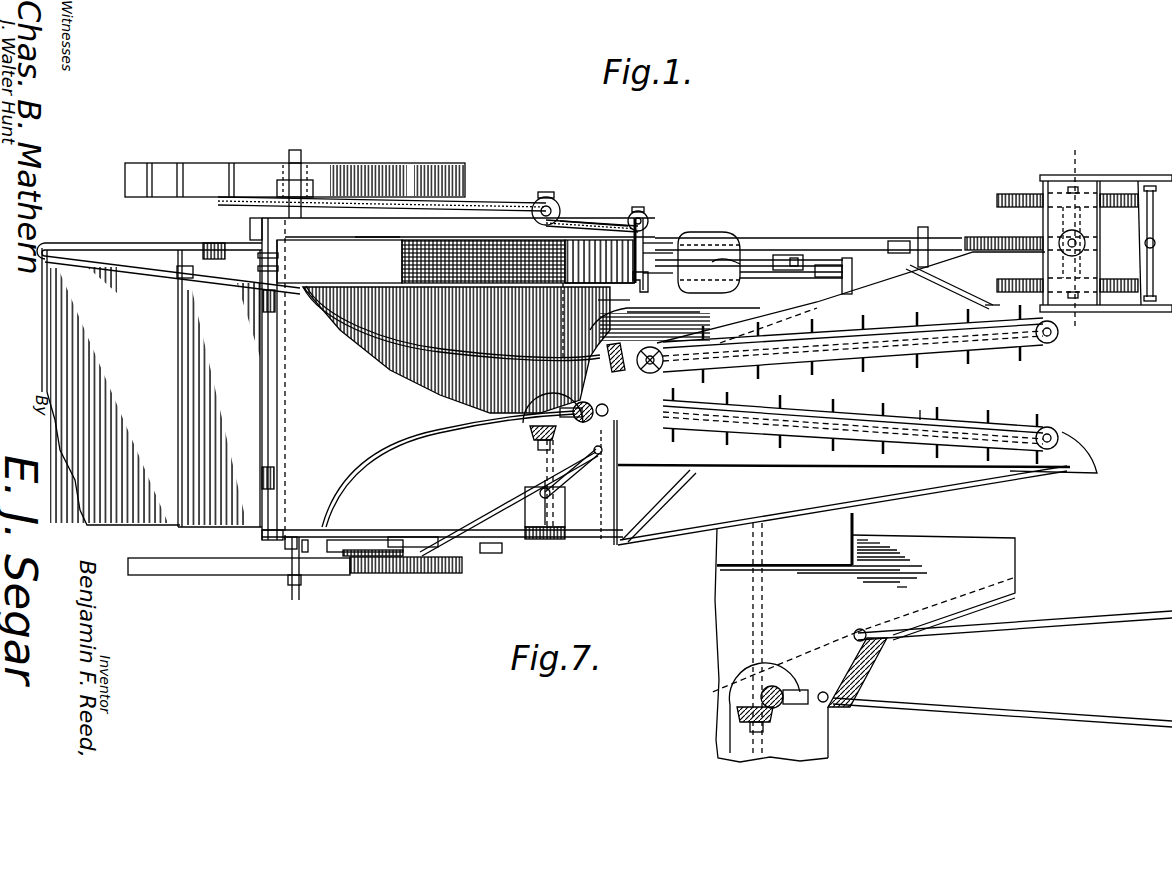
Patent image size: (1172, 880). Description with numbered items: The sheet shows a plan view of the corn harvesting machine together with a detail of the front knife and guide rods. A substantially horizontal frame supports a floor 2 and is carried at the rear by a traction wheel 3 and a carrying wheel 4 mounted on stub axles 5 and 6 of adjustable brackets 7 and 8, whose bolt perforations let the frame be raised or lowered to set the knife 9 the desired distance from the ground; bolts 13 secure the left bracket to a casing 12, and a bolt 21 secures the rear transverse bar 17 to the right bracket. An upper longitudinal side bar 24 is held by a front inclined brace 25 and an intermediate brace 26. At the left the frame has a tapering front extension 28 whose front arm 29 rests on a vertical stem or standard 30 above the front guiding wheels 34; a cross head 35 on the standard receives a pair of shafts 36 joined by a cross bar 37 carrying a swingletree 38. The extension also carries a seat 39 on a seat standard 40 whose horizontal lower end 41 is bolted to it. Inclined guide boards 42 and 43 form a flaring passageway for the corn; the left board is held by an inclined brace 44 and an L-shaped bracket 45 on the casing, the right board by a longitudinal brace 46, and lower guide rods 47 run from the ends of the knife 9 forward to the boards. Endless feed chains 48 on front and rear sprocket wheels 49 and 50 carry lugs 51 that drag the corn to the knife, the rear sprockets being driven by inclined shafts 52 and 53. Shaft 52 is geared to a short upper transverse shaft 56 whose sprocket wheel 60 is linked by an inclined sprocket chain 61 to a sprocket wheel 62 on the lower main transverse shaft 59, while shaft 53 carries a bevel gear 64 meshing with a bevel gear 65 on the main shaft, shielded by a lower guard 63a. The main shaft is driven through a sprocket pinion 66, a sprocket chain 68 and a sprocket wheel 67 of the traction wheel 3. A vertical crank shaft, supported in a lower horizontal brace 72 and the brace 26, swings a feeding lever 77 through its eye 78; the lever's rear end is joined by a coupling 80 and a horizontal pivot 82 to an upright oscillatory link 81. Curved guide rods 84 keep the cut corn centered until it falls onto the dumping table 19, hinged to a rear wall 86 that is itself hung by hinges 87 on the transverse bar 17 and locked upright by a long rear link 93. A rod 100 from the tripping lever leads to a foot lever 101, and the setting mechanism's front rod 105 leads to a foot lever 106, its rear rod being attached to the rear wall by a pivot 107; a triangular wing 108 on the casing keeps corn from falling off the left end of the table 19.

In FIG. 1, the floor 2 is at (442, 379).
In FIG. 7, the floor 2 is at (829, 744).
In FIG. 1, the traction wheel 3 is at (164, 180).
In FIG. 1, the carrying wheel 4 is at (230, 576).
In FIG. 1, the stub axle 5 is at (295, 150).
In FIG. 1, the stub axle 6 is at (292, 586).
In FIG. 1, the adjustable bracket 7 is at (458, 250).
In FIG. 1, the adjustable bracket 8 is at (292, 536).
In FIG. 1, the knife 9 is at (617, 355).
In FIG. 7, the knife 9 is at (866, 672).
In FIG. 1, the casing 12 is at (465, 247).
In FIG. 7, the casing 12 is at (819, 541).
In FIG. 1, the bolt 13 is at (560, 497).
In FIG. 1, the rear transverse bar 17 is at (266, 234).
In FIG. 1, the dumping table or platform 19 is at (111, 386).
In FIG. 1, the bolt 21 is at (306, 553).
In FIG. 1, the upper longitudinal side bar 24 is at (360, 540).
In FIG. 1, the front inclined brace 25 is at (660, 510).
In FIG. 1, the intermediate brace 26 is at (510, 548).
In FIG. 1, the tapering front extension 28 is at (808, 227).
In FIG. 7, the tapering front extension 28 is at (862, 614).
In FIG. 1, the front arm 29 is at (985, 237).
In FIG. 1, the vertical stem or standard 30 is at (1082, 246).
In FIG. 1, the front guiding wheels 34 is at (1020, 193).
In FIG. 1, the cross head 35 is at (1057, 218).
In FIG. 1, the plate 36 is at (1113, 175).
In FIG. 1, the cross bar 37 is at (1151, 186).
In FIG. 1, the swingletree 38 is at (1125, 243).
In FIG. 1, the seat 39 is at (712, 232).
In FIG. 1, the seat standard 40 is at (770, 258).
In FIG. 1, the lower end of seat standard 41 is at (800, 257).
In FIG. 1, the left hand guide board 42 is at (853, 326).
In FIG. 1, the right hand guide board 43 is at (857, 436).
In FIG. 1, the inclined brace 44 is at (956, 290).
In FIG. 1, the L-shaped bracket 45 is at (601, 297).
In FIG. 1, the longitudinal brace 46 is at (786, 512).
In FIG. 7, the lower guide rods 47 is at (983, 630).
In FIG. 1, the endless feed chains 48 is at (921, 410).
In FIG. 1, the front sprocket wheels 49 is at (1047, 345).
In FIG. 1, the rear sprocket wheels 50 is at (672, 355).
In FIG. 1, the lugs or projections 51 is at (855, 398).
In FIG. 1, the inclined shaft 52 is at (664, 352).
In FIG. 1, the inclined shaft 53 is at (613, 455).
In FIG. 7, the inclined shaft 53 is at (786, 710).
In FIG. 1, the upper transverse shaft 56 is at (656, 274).
In FIG. 1, the lower main transverse shaft 59 is at (545, 452).
In FIG. 7, the lower main transverse shaft 59 is at (766, 603).
In FIG. 1, the sprocket wheel 60 is at (648, 212).
In FIG. 1, the inclined sprocket chain 61 is at (618, 220).
In FIG. 1, the lower sprocket wheel 62 is at (578, 219).
In FIG. 1, the lower guard 63a is at (528, 413).
In FIG. 7, the lower guard 63a is at (730, 735).
In FIG. 1, the bevel gear 64 is at (581, 402).
In FIG. 7, the bevel gear 64 is at (778, 686).
In FIG. 1, the bevel gear 65 is at (554, 434).
In FIG. 7, the bevel gear 65 is at (749, 706).
In FIG. 1, the sprocket pinion 66 is at (556, 199).
In FIG. 1, the sprocket wheel 67 is at (377, 224).
In FIG. 1, the sprocket chain 68 is at (483, 200).
In FIG. 1, the lower horizontal brace 72 is at (567, 518).
In FIG. 1, the feeding lever 77 is at (497, 508).
In FIG. 1, the eye 78 is at (578, 468).
In FIG. 1, the coupling 80 is at (428, 537).
In FIG. 1, the upright oscillatory link or lever 81 is at (352, 557).
In FIG. 1, the horizontal pivot 82 is at (396, 574).
In FIG. 1, the curved guards or guides 84 is at (352, 336).
In FIG. 1, the rear wall 86 is at (220, 388).
In FIG. 1, the hinges 87 is at (275, 306).
In FIG. 1, the rear locking link 93 is at (280, 270).
In FIG. 1, the rod 100 is at (742, 279).
In FIG. 1, the foot lever 101 is at (853, 276).
In FIG. 1, the front rod 105 is at (280, 256).
In FIG. 1, the foot lever 106 is at (923, 227).
In FIG. 1, the pivot 107 is at (215, 243).
In FIG. 1, the triangular wing or extension 108 is at (85, 243).